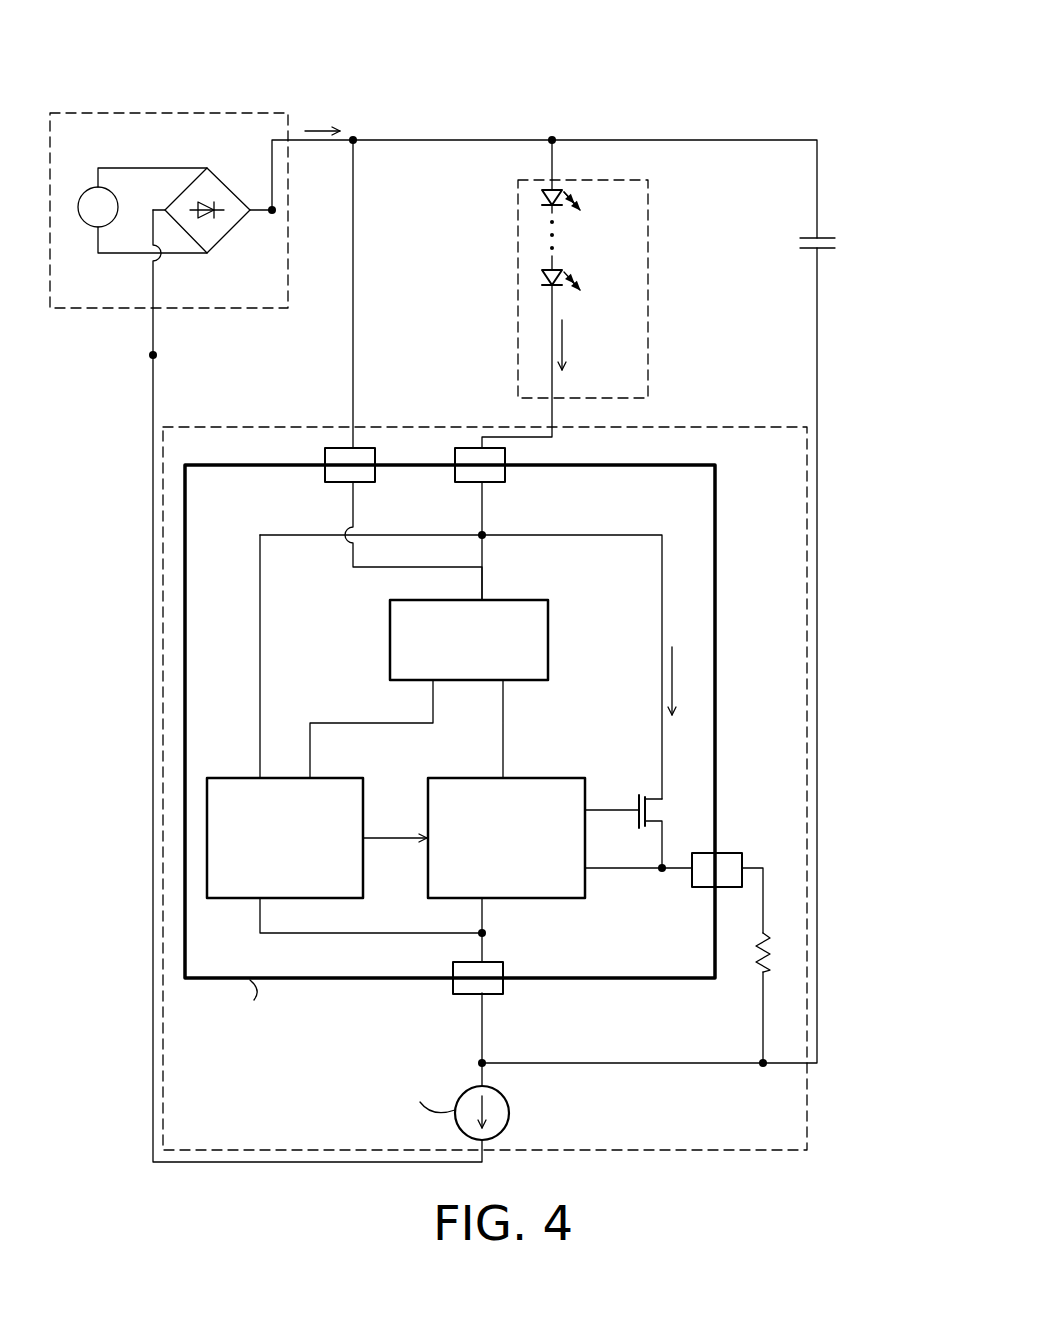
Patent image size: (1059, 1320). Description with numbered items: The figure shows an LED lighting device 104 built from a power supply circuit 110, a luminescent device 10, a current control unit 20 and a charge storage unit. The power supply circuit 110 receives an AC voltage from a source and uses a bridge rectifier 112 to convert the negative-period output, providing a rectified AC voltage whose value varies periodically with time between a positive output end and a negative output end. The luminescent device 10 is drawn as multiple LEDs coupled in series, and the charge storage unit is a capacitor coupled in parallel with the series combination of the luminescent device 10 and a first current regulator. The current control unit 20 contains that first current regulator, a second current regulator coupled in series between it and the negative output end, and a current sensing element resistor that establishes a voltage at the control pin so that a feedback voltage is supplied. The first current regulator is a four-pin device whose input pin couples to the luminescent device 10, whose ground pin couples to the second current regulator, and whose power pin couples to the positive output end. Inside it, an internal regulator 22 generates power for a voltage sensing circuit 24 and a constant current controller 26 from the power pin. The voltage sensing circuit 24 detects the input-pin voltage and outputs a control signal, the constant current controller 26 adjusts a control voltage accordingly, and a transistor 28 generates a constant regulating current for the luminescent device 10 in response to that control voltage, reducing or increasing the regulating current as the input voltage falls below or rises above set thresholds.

The LED lighting device 104 is at (722, 86).
The power supply circuit 110 is at (152, 113).
The bridge rectifier 112 is at (228, 189).
The luminescent device 10 is at (518, 284).
The current control unit 20 is at (163, 462).
The internal regulator 22 is at (527, 598).
The voltage sensing circuit 24 is at (345, 777).
The constant current controller 26 is at (540, 777).
The transistor 28 is at (656, 806).